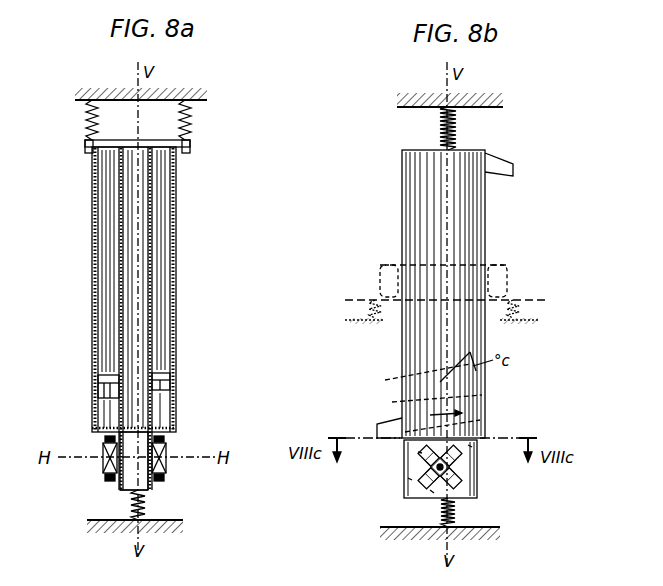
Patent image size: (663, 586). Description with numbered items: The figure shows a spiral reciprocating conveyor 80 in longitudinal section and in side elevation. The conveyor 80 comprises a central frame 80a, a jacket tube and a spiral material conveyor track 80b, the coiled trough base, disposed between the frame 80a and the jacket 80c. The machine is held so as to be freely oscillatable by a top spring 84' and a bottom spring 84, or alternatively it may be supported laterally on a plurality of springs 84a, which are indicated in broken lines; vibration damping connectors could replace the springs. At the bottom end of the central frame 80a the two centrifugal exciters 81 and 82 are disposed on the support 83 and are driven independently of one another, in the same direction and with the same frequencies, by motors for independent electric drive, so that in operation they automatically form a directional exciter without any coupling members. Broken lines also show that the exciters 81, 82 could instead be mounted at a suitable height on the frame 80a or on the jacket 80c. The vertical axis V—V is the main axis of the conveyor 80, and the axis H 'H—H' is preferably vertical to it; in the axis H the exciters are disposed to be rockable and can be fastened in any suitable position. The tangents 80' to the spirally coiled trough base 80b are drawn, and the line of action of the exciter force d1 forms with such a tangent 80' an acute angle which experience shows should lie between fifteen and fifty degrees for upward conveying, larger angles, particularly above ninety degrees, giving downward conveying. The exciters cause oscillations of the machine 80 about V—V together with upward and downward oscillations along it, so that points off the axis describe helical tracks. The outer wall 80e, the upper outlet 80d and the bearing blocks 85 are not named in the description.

In FIG. 8A, the spiral conveyor 80 is at (158, 289).
In FIG. 8A, the central frame 80a is at (118, 241).
In FIG. 8A, the spiral material conveyor track 80b is at (95, 373).
In FIG. 8B, the jacket 80c is at (378, 426).
In FIG. 8B, the upper spout 80d is at (514, 167).
In FIG. 8A, the outer casing 80e is at (178, 267).
In FIG. 8B, the outer casing 80e is at (403, 200).
In FIG. 8B, the tangents to the trough base 80' is at (420, 398).
In FIG. 8A, the centrifugal exciter 81 is at (103, 472).
In FIG. 8B, the centrifugal exciter 81 is at (381, 271).
In FIG. 8A, the centrifugal exciter 82 is at (167, 449).
In FIG. 8B, the centrifugal exciter 82 is at (508, 279).
In FIG. 8A, the support 83 is at (147, 484).
In FIG. 8B, the support 83 is at (473, 492).
In FIG. 8A, the bottom spring 84 is at (120, 505).
In FIG. 8B, the bottom spring 84 is at (466, 512).
In FIG. 8A, the top spring 84' is at (135, 120).
In FIG. 8B, the top spring 84' is at (428, 128).
In FIG. 8B, the lateral springs 84a is at (366, 301).
In FIG. 8A, the bearing block 85 is at (104, 449).
In FIG. 8B, the bearing block 85 is at (432, 492).
In FIG. 8B, the axis H— H is at (444, 468).
In FIG. 8B, the line of action of the exciter force d1 is at (470, 446).